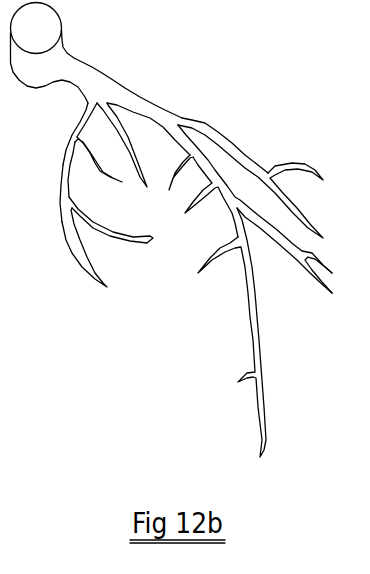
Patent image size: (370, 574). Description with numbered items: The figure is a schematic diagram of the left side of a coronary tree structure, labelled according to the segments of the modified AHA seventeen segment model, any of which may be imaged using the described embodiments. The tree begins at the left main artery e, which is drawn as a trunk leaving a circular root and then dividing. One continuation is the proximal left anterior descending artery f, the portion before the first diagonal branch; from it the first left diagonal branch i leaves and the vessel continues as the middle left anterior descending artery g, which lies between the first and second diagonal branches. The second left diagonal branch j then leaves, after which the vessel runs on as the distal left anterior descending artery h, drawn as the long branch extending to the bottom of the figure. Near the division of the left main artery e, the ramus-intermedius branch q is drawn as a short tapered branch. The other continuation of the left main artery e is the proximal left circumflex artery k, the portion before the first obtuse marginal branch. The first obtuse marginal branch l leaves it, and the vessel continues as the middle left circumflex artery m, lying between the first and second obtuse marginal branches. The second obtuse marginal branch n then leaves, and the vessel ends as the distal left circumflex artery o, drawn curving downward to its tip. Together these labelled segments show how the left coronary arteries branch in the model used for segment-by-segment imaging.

The left main artery e is at (97, 61).
The proximal left anterior descending artery f is at (187, 122).
The proximal left circumflex artery k is at (74, 128).
The first obtuse marginal branch l is at (98, 159).
The ramus-intermedius branch q is at (127, 145).
The middle left circumflex artery m is at (53, 182).
The second obtuse marginal branch n is at (111, 220).
The distal left circumflex artery o is at (84, 261).
The first left diagonal branch i is at (250, 180).
The middle left anterior descending artery g is at (250, 209).
The distal left anterior descending artery h is at (238, 332).
The second left diagonal branch j is at (316, 283).